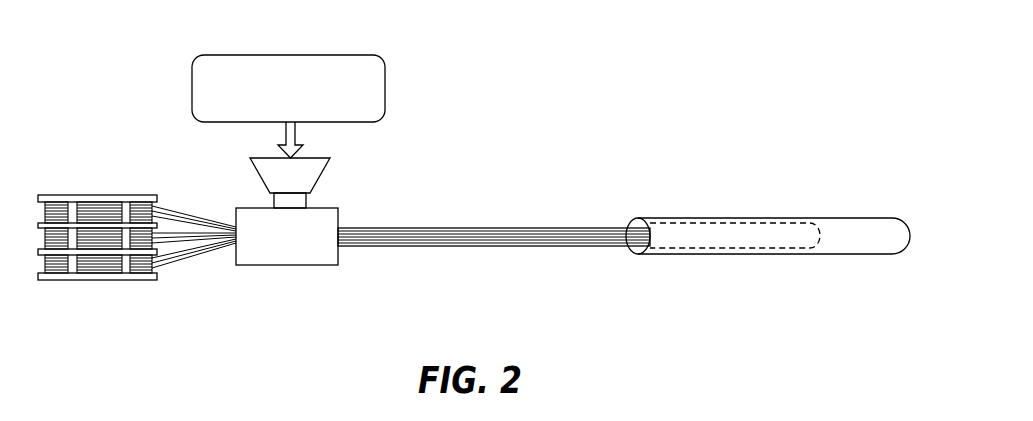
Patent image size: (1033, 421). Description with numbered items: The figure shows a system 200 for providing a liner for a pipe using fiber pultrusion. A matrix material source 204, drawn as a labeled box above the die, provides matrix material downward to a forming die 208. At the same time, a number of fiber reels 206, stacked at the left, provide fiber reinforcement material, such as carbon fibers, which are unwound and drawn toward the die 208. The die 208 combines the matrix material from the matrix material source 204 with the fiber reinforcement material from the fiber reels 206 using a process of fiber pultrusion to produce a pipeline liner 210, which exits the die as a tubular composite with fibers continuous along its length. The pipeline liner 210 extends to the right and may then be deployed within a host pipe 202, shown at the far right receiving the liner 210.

The system 200 is at (638, 56).
The host pipe 202 is at (767, 218).
The matrix material source 204 is at (259, 55).
The fiber reels 206 is at (100, 195).
The forming die 208 is at (320, 265).
The pipeline liner 210 is at (497, 228).